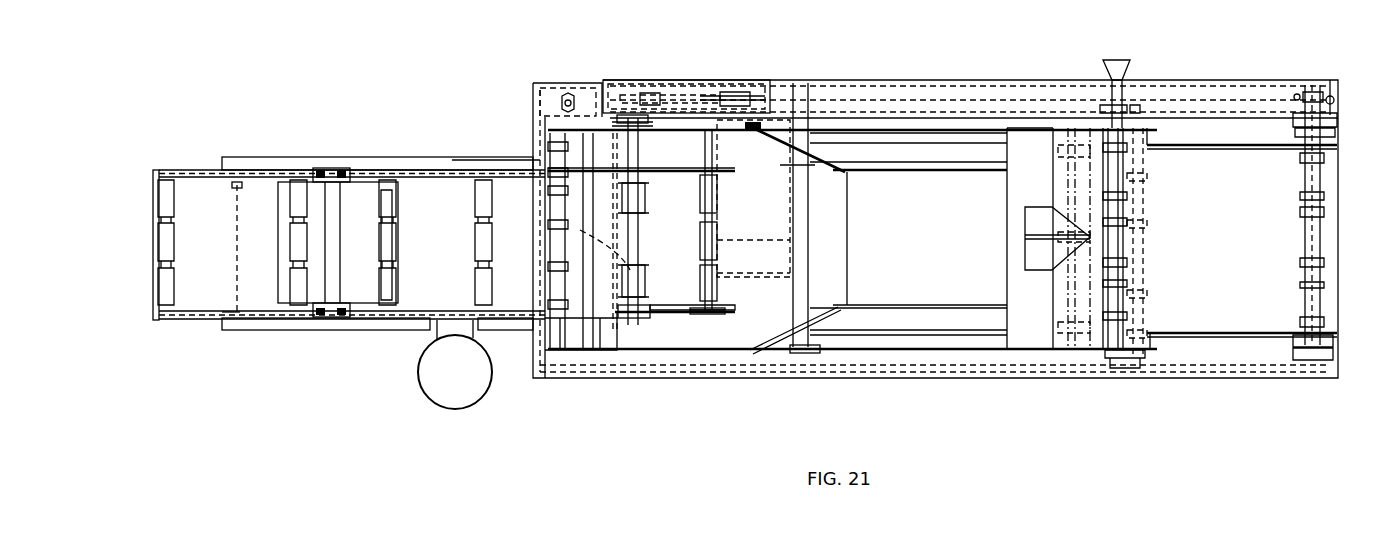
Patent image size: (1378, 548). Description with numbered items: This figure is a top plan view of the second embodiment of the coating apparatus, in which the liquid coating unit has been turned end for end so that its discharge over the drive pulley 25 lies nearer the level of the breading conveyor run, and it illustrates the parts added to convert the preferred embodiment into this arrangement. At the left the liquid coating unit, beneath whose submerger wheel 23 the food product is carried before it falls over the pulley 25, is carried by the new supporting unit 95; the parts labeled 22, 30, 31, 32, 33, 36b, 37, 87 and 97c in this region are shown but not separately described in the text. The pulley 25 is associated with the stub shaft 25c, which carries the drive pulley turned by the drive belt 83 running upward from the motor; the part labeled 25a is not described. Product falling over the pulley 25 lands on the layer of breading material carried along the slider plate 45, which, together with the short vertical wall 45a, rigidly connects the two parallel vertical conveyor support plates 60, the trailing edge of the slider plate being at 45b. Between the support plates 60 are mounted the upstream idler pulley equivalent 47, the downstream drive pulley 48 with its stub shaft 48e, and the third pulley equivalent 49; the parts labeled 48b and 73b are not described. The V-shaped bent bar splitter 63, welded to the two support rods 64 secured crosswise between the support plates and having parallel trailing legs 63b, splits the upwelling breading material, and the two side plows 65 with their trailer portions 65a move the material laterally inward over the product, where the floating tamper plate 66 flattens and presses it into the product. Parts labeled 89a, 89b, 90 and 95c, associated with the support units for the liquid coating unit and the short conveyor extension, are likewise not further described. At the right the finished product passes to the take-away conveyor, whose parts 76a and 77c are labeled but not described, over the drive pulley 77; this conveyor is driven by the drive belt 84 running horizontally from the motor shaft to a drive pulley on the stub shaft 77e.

The end plate 22 is at (195, 166).
The submerger wheel 23 is at (312, 180).
The drive pulley 25 is at (648, 213).
The roller mounting 25a is at (642, 127).
The stub shaft 25c is at (668, 100).
The roller 30 is at (390, 190).
The roller 31 is at (280, 188).
The frame 32 is at (448, 152).
The roller assembly 33 is at (340, 230).
The bracket 36b is at (437, 322).
The wheel 37 is at (426, 385).
The slider plate 45 is at (746, 233).
The short vertical wall 45a is at (610, 88).
The trailing edge of the slider plate 45b is at (1022, 323).
The idler pulley equivalent 47 is at (546, 242).
The drive pulley 48 is at (1127, 196).
The funnel guide 48b is at (1110, 66).
The stub shaft 48e is at (1122, 110).
The idler pulley equivalent 49 is at (1145, 178).
The conveyor support plates 60 is at (1000, 128).
The splitter 63 is at (630, 318).
The trailing legs 63b is at (706, 314).
The support rods 64 is at (582, 345).
The side plows 65 is at (835, 172).
The trailer portion 65a is at (905, 175).
The tamper plate 66 is at (926, 233).
The bracket 73b is at (1033, 210).
The cross bar 76a is at (1200, 150).
The drive pulley 77 is at (1323, 197).
The column mount 77c is at (1323, 178).
The stub shaft 77e is at (1337, 80).
The drive belt 83 is at (732, 80).
The drive belt 84 is at (1336, 106).
The end member 87 is at (240, 303).
The lower bar 89a is at (668, 305).
The link 89b is at (684, 260).
The roller 90 is at (718, 196).
The unit 95 is at (327, 157).
The housing 95c is at (533, 130).
The guide 97c is at (235, 266).